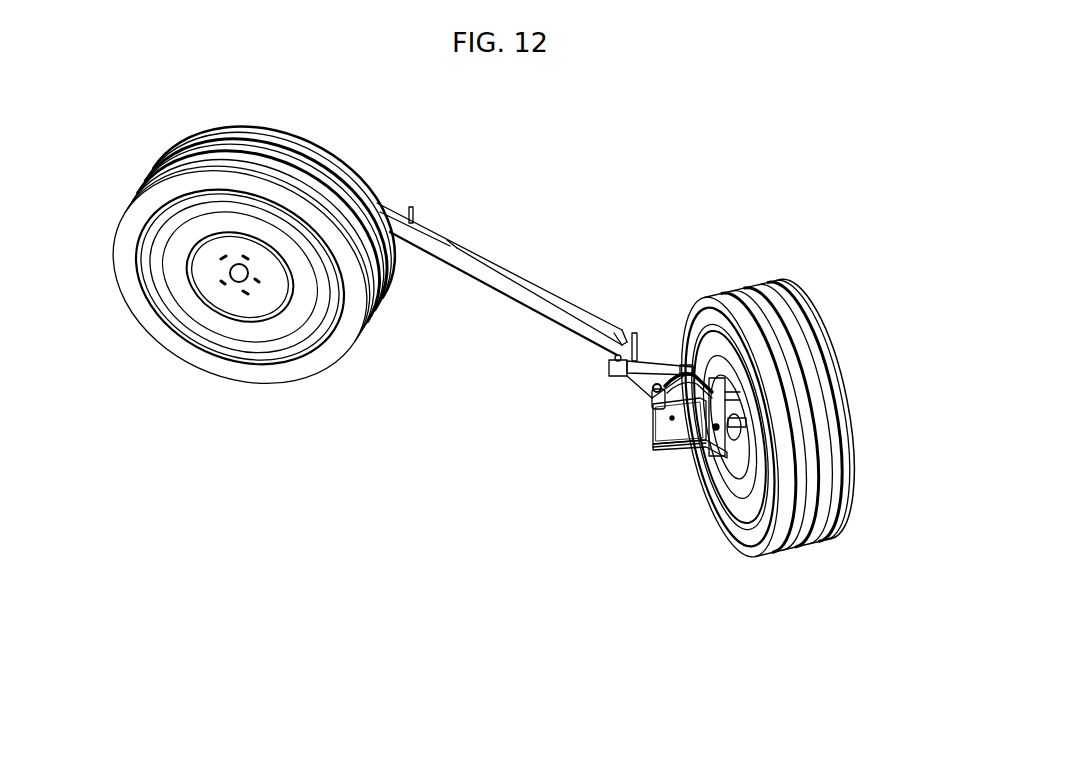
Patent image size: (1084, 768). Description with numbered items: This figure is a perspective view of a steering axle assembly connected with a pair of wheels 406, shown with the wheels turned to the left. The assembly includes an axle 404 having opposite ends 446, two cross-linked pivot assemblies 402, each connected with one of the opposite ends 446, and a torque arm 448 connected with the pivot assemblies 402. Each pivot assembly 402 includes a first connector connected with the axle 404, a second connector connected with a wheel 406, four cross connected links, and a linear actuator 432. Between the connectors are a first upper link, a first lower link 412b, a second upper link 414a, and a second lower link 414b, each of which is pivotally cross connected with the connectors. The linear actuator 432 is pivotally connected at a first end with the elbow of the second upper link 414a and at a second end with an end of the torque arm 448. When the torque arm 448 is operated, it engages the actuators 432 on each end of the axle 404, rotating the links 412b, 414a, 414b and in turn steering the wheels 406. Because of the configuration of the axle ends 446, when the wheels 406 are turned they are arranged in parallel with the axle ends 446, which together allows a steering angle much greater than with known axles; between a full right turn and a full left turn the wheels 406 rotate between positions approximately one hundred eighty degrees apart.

The pivot assembly 402 is at (702, 512).
The axle 404 is at (495, 260).
The wheel 406 is at (180, 143).
The first lower link 412b is at (702, 458).
The second upper link 414a is at (652, 398).
The second lower link 414b is at (673, 440).
The linear actuator 432 is at (662, 358).
The axle end 446 is at (442, 238).
The torque arm 448 is at (512, 290).